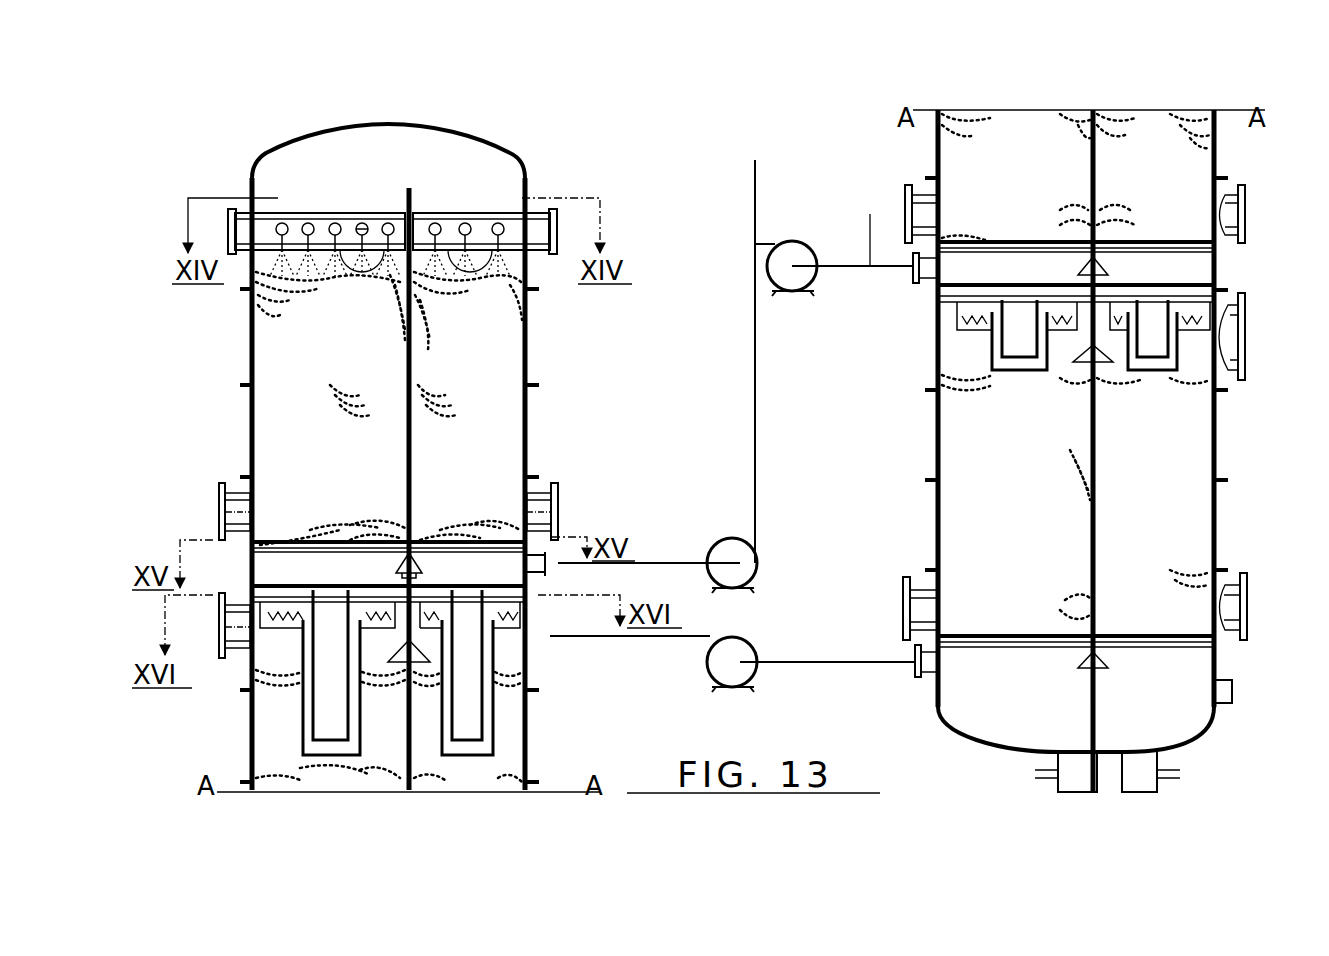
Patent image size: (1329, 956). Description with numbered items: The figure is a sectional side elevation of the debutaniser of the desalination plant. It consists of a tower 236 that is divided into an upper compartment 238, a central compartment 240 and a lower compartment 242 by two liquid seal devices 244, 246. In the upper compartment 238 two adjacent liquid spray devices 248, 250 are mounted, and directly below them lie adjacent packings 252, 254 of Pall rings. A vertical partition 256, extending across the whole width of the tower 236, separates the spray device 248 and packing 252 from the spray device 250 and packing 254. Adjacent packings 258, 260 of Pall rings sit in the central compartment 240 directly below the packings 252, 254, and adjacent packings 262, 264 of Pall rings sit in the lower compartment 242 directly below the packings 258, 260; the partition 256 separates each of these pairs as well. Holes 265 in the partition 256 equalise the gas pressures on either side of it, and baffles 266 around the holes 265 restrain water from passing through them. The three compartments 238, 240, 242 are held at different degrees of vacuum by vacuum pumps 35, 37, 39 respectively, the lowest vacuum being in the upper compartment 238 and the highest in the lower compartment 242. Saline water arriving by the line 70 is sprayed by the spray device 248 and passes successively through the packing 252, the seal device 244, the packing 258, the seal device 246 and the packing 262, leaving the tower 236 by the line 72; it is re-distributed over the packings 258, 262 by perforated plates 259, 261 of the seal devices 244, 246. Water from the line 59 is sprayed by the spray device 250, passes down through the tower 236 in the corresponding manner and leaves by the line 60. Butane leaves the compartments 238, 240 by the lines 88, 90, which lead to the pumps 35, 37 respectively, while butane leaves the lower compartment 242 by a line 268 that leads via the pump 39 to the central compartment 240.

The vacuum pump 35 is at (740, 550).
The vacuum pump 37 is at (798, 254).
The vacuum pump 39 is at (760, 660).
The line 59 is at (540, 246).
The line 60 is at (1150, 760).
The line 70 is at (252, 228).
The line 72 is at (1055, 760).
The line 88 is at (644, 562).
The line 90 is at (866, 226).
The tower 236 is at (530, 765).
The upper compartment 238 is at (527, 418).
The central compartment 240 is at (535, 668).
The lower compartment 242 is at (1216, 530).
The liquid seal device 244 is at (290, 585).
The liquid seal device 246 is at (1195, 283).
The liquid spray device 248 is at (337, 216).
The liquid spray device 250 is at (472, 212).
The packing 252 is at (265, 358).
The packing 254 is at (502, 365).
The vertical partition 256 is at (411, 196).
The packing 258 is at (283, 738).
The perforated plate 259 is at (290, 632).
The packing 260 is at (510, 715).
The perforated plate 261 is at (975, 322).
The packing 262 is at (965, 425).
The packing 264 is at (1180, 425).
The holes 265 is at (400, 571).
The baffles 266 is at (420, 571).
The line 268 is at (692, 636).